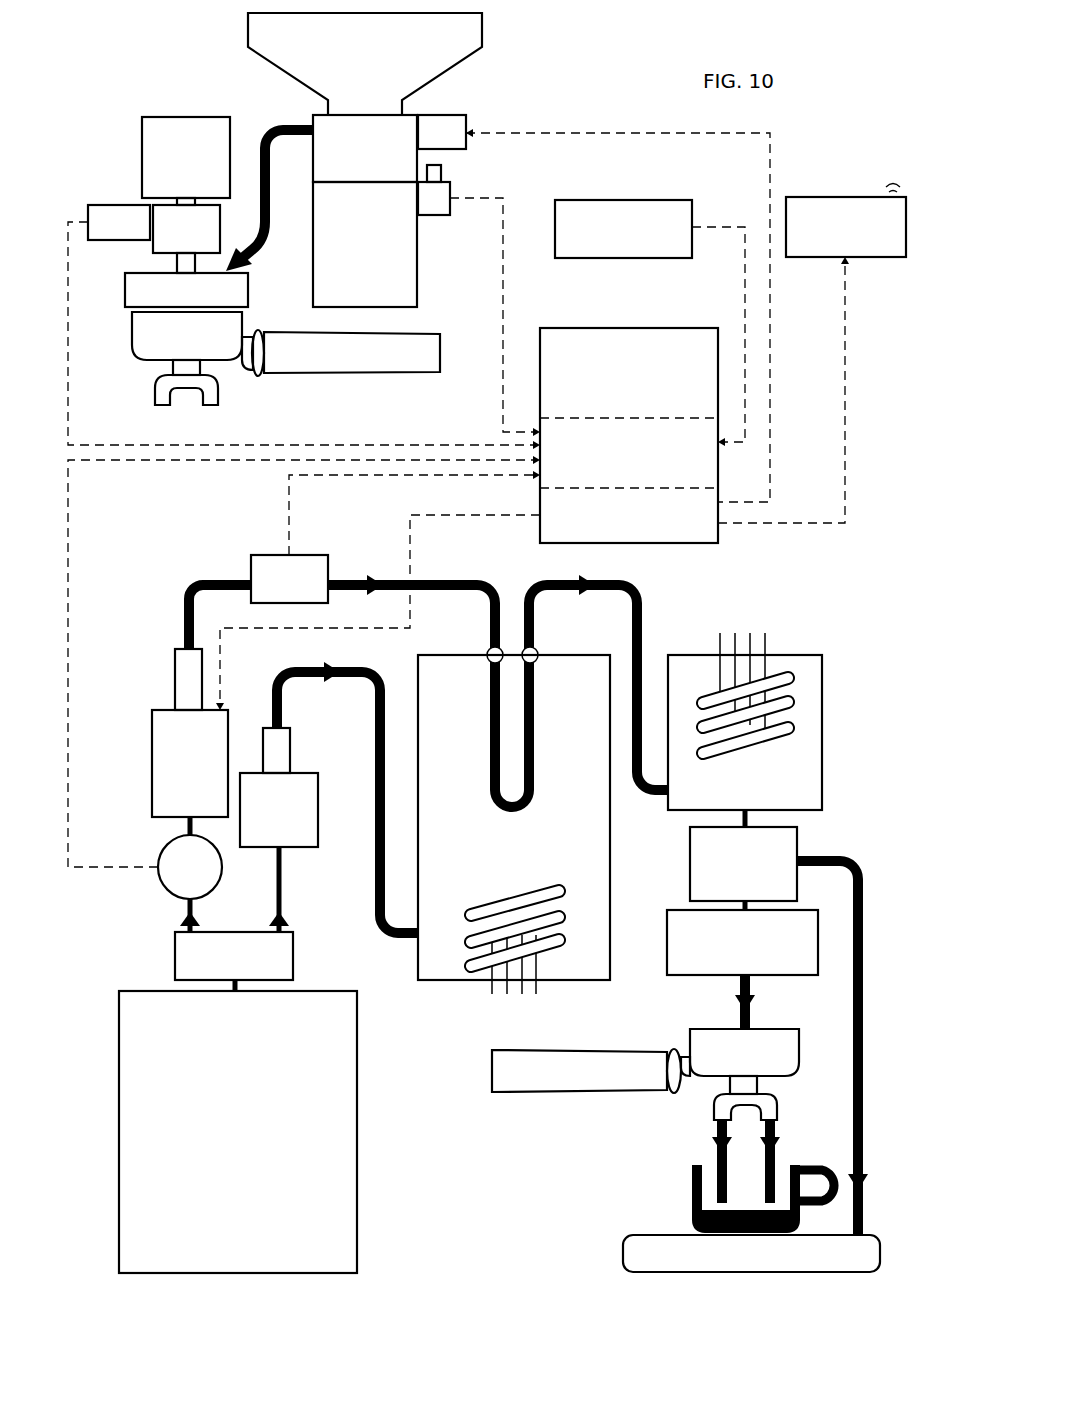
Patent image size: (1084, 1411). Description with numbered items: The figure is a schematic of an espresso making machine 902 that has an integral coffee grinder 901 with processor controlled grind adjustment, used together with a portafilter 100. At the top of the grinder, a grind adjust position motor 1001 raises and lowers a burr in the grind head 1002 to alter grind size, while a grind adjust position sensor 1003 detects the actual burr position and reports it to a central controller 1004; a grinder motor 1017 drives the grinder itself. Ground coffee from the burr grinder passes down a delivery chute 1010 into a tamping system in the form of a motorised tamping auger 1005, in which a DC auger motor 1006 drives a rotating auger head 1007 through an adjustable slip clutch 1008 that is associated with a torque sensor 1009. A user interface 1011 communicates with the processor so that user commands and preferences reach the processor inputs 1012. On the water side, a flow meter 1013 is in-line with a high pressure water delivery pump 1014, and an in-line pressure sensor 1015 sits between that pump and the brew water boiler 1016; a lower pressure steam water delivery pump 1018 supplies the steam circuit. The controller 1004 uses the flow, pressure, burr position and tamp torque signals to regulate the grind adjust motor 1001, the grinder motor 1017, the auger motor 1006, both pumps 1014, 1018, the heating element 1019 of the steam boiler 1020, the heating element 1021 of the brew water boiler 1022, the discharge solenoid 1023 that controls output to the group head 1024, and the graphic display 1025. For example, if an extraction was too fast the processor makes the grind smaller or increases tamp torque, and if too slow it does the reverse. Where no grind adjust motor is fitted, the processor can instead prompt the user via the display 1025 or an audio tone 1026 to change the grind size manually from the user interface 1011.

The portafilter 100 is at (585, 1073).
The coffee grinder 901 is at (443, 160).
The espresso making machine 902 is at (869, 217).
The grind adjust position motor 1001 is at (460, 125).
The grind head 1002 is at (400, 160).
The grind adjust position sensor 1003 is at (443, 195).
The central controller 1004 is at (732, 416).
The motorised tamping auger 1005 is at (140, 168).
The DC auger motor 1006 is at (160, 137).
The rotating auger head 1007 is at (125, 280).
The adjustable slip clutch 1008 is at (173, 213).
The torque sensor 1009 is at (100, 220).
The delivery chute 1010 is at (272, 225).
The user interface 1011 is at (698, 164).
The processor inputs 1012 is at (603, 418).
The flow meter 1013 is at (190, 870).
The high pressure water delivery pump 1014 is at (157, 750).
The in-line pressure sensor 1015 is at (266, 572).
The brew water boiler 1016 is at (788, 704).
The grinder motor 1017 is at (395, 278).
The lower pressure steam water delivery pump 1018 is at (302, 822).
The heating element of the steam boiler 1019 is at (478, 971).
The steam boiler 1020 is at (522, 861).
The heating element of the brew water boiler 1021 is at (780, 675).
The brew water boiler 1022 is at (805, 677).
The discharge solenoid 1023 is at (780, 840).
The group head 1024 is at (800, 933).
The graphic display 1025 is at (879, 259).
The audio tone 1026 is at (947, 138).